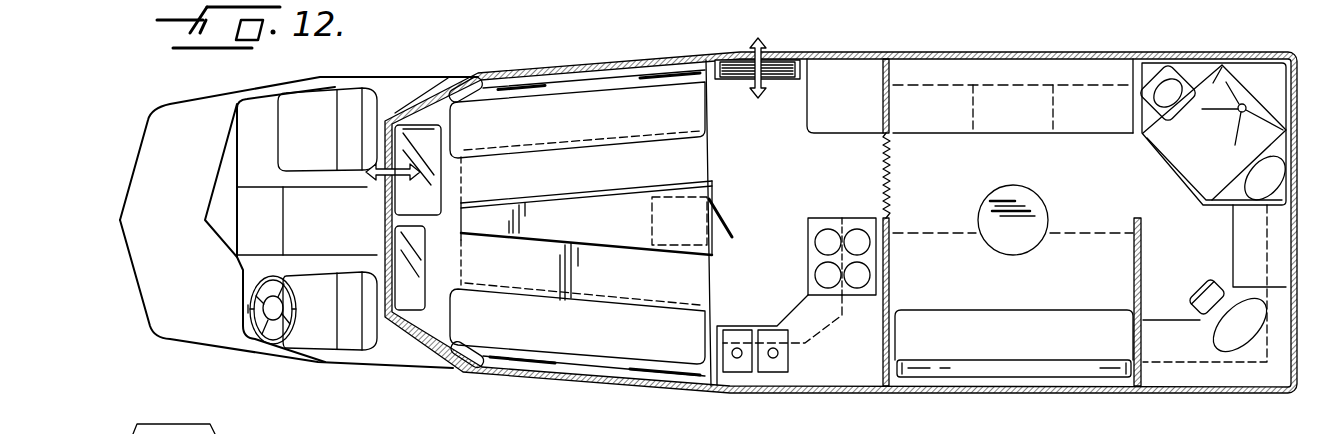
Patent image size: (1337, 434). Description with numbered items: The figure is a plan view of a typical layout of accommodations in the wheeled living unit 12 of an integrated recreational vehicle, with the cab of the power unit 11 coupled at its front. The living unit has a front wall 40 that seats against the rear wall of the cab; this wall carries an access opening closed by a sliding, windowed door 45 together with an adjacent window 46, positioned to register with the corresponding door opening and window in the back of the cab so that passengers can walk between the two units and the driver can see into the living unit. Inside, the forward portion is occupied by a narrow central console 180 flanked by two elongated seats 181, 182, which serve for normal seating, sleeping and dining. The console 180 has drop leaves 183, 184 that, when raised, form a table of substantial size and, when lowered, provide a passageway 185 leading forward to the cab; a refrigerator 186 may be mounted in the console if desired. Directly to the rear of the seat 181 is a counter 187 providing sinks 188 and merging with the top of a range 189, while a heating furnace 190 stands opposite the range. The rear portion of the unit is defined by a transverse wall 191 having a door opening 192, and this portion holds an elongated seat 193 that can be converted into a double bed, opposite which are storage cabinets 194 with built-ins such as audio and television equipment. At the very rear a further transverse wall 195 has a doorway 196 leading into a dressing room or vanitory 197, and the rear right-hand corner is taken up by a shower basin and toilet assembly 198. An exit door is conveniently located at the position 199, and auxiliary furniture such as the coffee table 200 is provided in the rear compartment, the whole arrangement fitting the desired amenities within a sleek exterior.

The power unit 11 is at (390, 73).
The living unit 12 is at (1024, 51).
The front wall 40 is at (400, 200).
The sliding windowed door 45 is at (427, 150).
The window 46 is at (422, 268).
The central console 180 is at (608, 232).
The elongated seat 181 is at (603, 343).
The elongated seat 182 is at (600, 103).
The drop leaf 183 is at (573, 303).
The drop leaf 184 is at (681, 184).
The passageway 185 is at (560, 181).
The refrigerator 186 is at (687, 243).
The counter 187 is at (860, 356).
The sinks 188 is at (775, 340).
The range 189 is at (818, 220).
The heating furnace 190 is at (835, 128).
The transverse wall 191 is at (890, 287).
The door opening 192 is at (889, 180).
The elongated seat 193 is at (1013, 313).
The cabinets 194 is at (1027, 133).
The transverse wall 195 is at (1133, 263).
The doorway 196 is at (1152, 199).
The dressing room 197 is at (1208, 282).
The shower basin and toilet assembly 198 is at (1225, 63).
The exit door position 199 is at (787, 55).
The coffee table 200 is at (985, 222).